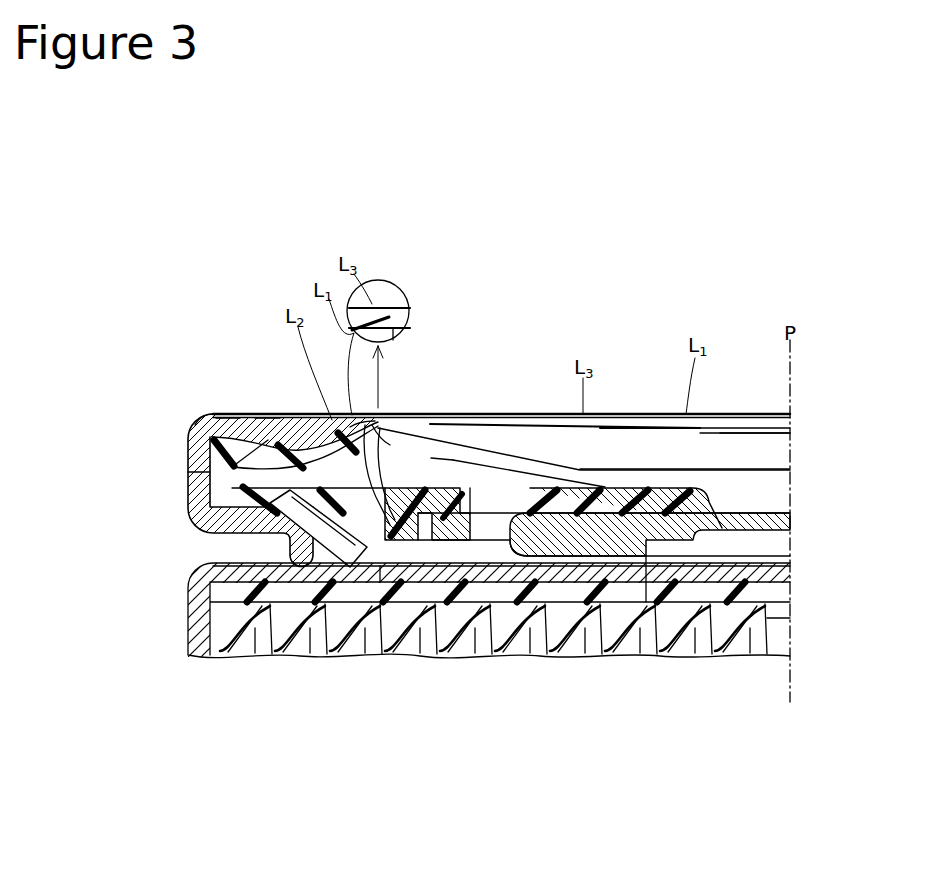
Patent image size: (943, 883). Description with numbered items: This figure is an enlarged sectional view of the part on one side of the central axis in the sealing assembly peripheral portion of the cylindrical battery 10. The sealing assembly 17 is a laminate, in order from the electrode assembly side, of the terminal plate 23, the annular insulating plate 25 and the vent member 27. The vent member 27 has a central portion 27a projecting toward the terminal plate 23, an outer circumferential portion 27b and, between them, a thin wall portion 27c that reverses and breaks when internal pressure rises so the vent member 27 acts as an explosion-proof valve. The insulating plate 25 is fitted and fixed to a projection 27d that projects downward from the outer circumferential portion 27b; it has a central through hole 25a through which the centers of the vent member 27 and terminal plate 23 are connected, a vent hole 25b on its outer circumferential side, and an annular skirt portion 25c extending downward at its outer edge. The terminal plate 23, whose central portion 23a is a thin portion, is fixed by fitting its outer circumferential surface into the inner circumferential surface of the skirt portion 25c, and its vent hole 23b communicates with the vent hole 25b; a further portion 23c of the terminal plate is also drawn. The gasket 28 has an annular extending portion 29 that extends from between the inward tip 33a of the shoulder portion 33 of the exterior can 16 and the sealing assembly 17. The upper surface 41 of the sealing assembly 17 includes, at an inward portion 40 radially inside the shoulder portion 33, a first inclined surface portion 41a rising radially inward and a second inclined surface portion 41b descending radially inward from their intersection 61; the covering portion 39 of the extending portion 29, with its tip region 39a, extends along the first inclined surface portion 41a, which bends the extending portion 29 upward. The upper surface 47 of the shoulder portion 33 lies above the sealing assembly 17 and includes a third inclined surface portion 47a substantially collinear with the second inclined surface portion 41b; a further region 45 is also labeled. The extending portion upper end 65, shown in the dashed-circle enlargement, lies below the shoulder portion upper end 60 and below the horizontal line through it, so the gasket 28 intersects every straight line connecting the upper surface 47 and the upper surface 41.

The cylindrical battery 10 is at (567, 372).
The exterior can 16 is at (197, 603).
The sealing assembly 17 is at (650, 414).
The terminal plate 23 is at (758, 530).
The central portion 23a is at (740, 620).
The vent hole 23b is at (475, 600).
The frame flange 23c is at (712, 512).
The insulating plate 25 is at (400, 605).
The through hole 25a is at (697, 535).
The vent hole 25b is at (500, 545).
The skirt portion 25c is at (380, 595).
The vent member 27 is at (735, 414).
The central portion 27a is at (760, 414).
The outer circumferential portion 27b is at (455, 458).
The thin wall portion 27c is at (538, 413).
The projection 27d is at (431, 458).
The gasket 28 is at (190, 472).
The extending portion 29 is at (389, 328).
The shoulder portion 33 is at (192, 441).
The inward tip 33a is at (302, 432).
The covering portion 39 is at (356, 432).
The clip tip 39a is at (356, 417).
The inward portion 40 is at (708, 414).
The upper surface 41 is at (626, 455).
The first inclined surface portion 41a is at (215, 509).
The second inclined surface portion 41b is at (466, 462).
The spring member 45 is at (266, 417).
The upper surface 47 is at (238, 417).
The third inclined surface portion 47a is at (216, 417).
The shoulder portion upper end 60 is at (207, 415).
The intersection 61 is at (385, 420).
The extending portion upper end 65 is at (362, 320).